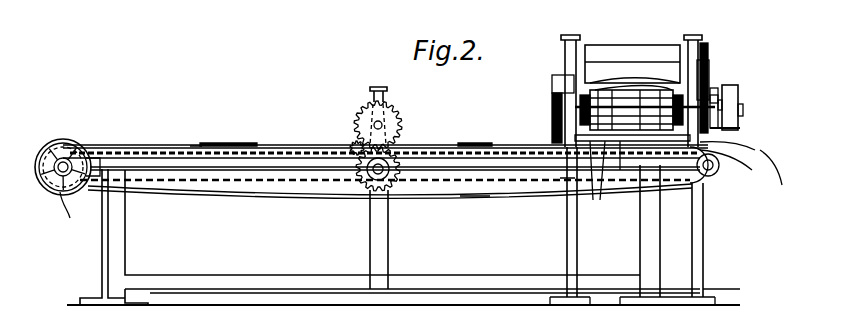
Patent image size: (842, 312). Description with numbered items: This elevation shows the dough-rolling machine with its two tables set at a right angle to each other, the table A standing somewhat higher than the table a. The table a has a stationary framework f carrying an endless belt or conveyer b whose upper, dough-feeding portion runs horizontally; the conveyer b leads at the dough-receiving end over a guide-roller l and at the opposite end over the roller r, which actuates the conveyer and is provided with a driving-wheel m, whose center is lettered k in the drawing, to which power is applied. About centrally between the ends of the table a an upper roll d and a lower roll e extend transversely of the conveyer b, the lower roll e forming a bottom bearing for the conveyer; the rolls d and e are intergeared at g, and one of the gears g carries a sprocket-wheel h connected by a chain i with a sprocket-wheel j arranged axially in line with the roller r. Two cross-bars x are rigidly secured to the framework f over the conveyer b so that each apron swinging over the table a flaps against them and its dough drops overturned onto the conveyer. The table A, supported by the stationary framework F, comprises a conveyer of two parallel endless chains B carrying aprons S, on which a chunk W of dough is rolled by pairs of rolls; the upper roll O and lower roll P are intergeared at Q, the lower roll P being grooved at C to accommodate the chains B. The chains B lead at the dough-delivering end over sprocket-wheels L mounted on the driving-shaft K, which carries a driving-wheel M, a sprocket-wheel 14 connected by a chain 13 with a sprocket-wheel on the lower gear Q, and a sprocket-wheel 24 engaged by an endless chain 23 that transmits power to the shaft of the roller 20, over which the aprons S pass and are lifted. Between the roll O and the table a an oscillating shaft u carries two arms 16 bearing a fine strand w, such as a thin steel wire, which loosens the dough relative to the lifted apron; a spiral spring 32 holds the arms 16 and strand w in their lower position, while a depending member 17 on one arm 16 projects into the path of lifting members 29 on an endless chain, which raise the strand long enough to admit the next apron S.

The stationary framework f is at (120, 262).
The dough-rolling table a is at (385, 129).
The endless belt or conveyer b is at (467, 210).
The chunk of dough W is at (222, 143).
The fine strand w is at (600, 92).
The chain i is at (250, 190).
The driving-wheel m is at (44, 194).
The wheel hub shaft k is at (66, 160).
The sprocket-wheel j is at (92, 152).
The roller r is at (70, 200).
The upper roll d is at (396, 122).
The lower roll e is at (398, 176).
The gears g is at (355, 146).
The sprocket-wheel h is at (364, 178).
The strand-bearing arms 16 is at (566, 75).
The upper roll O is at (662, 52).
The oscillating shaft u is at (634, 80).
The lifting members 29 is at (555, 105).
The depending member 17 is at (560, 80).
The spiral spring 32 is at (706, 45).
The dough-rolling table A is at (718, 67).
The gears Q is at (716, 92).
The chain 13 is at (720, 96).
The sprocket-wheel 14 is at (722, 104).
The driving-wheel M is at (739, 100).
The driving-shaft K is at (744, 112).
The sprocket-wheel 24 is at (725, 128).
The annular grooves C is at (560, 178).
The endless chains B is at (570, 190).
The sprocket-wheels L is at (573, 150).
The aprons S is at (632, 161).
The cross-bars x is at (612, 145).
The roller 20 is at (622, 172).
The lower roll P is at (667, 231).
The guide-roller l is at (712, 180).
The stationary framework F is at (703, 255).
The endless chain 23 is at (775, 175).